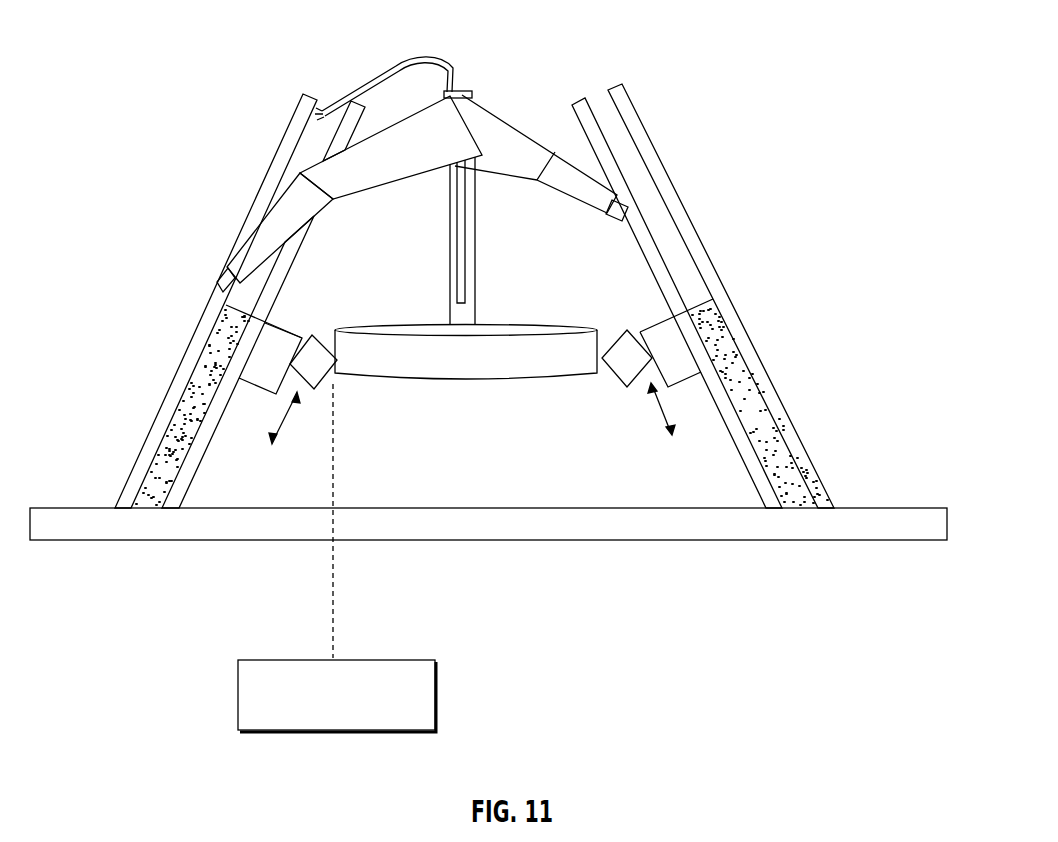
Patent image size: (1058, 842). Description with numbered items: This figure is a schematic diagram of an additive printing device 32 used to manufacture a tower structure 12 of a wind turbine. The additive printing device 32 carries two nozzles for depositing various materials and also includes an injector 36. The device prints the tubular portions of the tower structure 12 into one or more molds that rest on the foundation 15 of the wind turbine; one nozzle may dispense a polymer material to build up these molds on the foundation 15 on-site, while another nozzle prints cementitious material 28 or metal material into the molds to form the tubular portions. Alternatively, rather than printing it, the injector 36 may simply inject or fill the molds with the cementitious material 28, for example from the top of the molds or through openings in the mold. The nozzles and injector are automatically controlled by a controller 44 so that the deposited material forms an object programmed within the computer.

The tower structure 12 is at (774, 441).
The foundation 15 is at (72, 508).
The cementitious material 28 is at (797, 480).
The additive printing device 32 is at (546, 106).
The injector 36 is at (400, 63).
The controller 44 is at (238, 702).